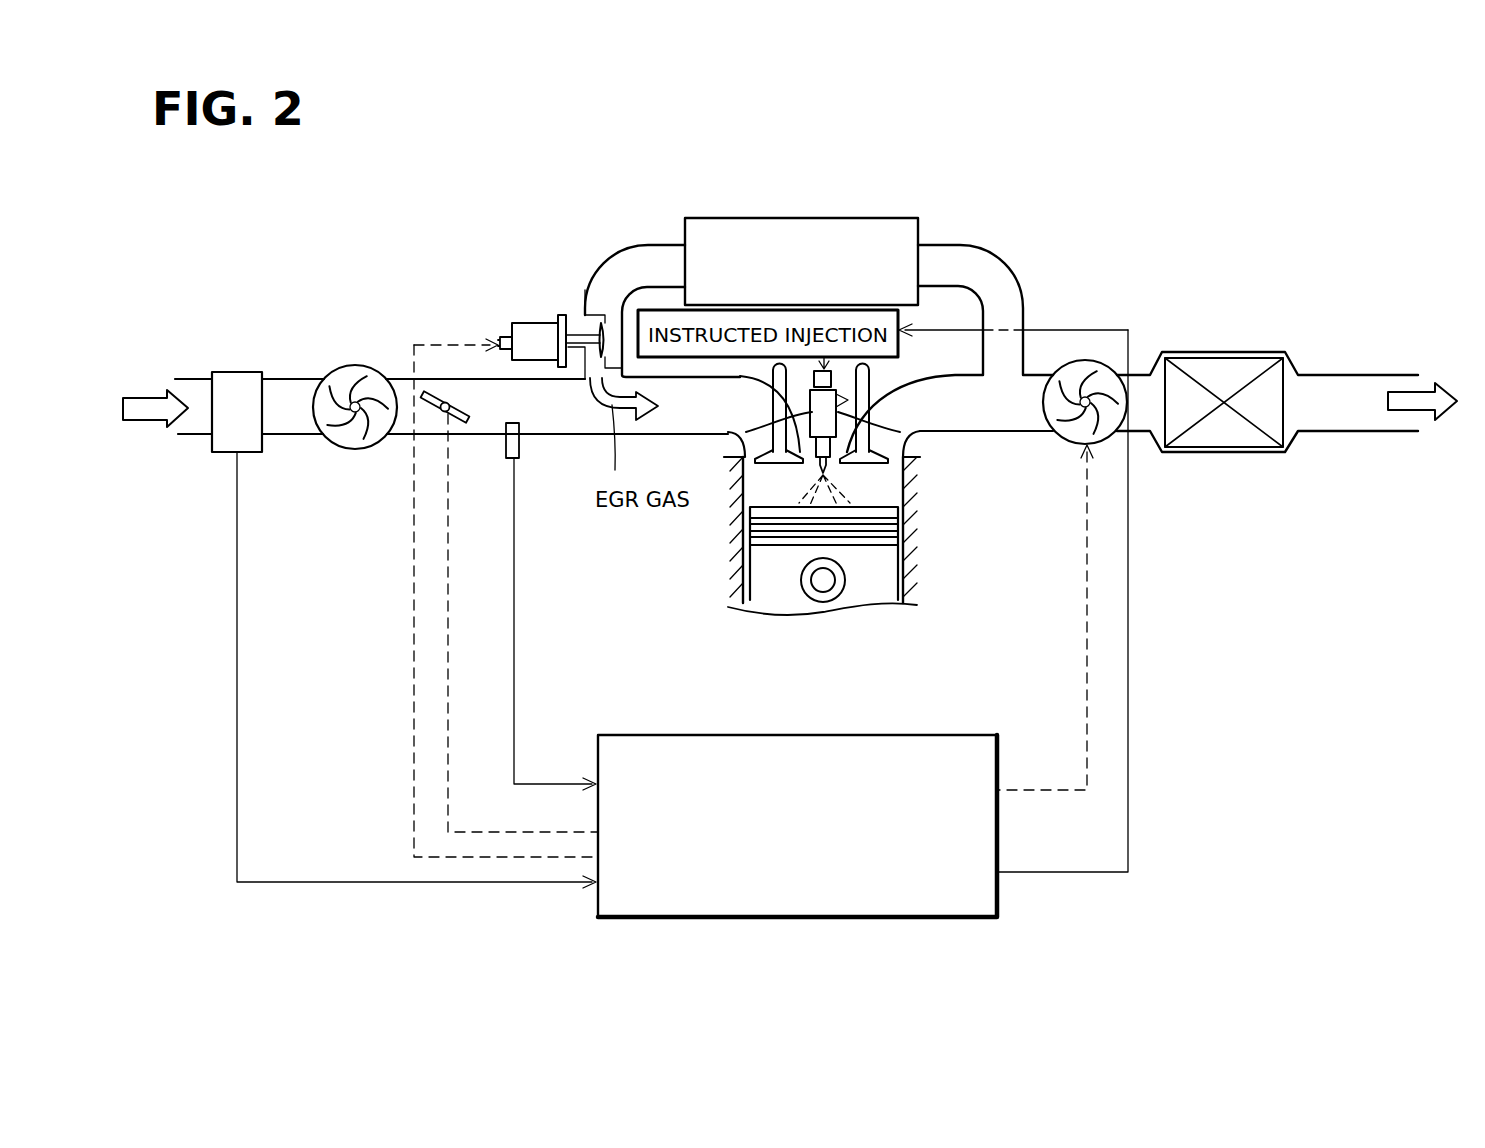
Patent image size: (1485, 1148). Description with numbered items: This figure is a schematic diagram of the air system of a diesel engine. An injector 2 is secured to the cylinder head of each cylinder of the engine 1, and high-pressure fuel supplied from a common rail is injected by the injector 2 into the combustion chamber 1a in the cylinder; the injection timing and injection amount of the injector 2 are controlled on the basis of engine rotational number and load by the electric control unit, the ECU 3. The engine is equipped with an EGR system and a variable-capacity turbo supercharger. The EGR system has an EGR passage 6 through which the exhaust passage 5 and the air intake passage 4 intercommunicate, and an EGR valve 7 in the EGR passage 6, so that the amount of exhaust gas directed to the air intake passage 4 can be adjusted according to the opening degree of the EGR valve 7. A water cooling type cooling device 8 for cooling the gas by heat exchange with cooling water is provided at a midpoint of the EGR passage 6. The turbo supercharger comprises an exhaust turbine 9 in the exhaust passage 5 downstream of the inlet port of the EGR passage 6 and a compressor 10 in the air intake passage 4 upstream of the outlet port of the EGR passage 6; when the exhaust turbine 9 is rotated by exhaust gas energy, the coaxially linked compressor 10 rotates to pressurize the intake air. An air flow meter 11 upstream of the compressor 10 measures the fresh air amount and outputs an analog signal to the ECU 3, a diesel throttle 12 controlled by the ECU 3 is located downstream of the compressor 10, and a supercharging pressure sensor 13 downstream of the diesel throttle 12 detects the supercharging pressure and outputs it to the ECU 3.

The engine 1 is at (723, 543).
The combustion chamber 1a is at (887, 487).
The injector 2 is at (733, 441).
The ECU 3 is at (897, 735).
The air intake passage 4 is at (310, 377).
The exhaust passage 5 is at (1350, 431).
The EGR passage 6 is at (987, 248).
The EGR valve 7 is at (618, 365).
The cooling device 8 is at (820, 218).
The exhaust turbine 9 is at (1068, 450).
The compressor 10 is at (347, 450).
The air flow meter 11 is at (235, 370).
The diesel throttle 12 is at (470, 425).
The supercharging pressure sensor 13 is at (520, 447).